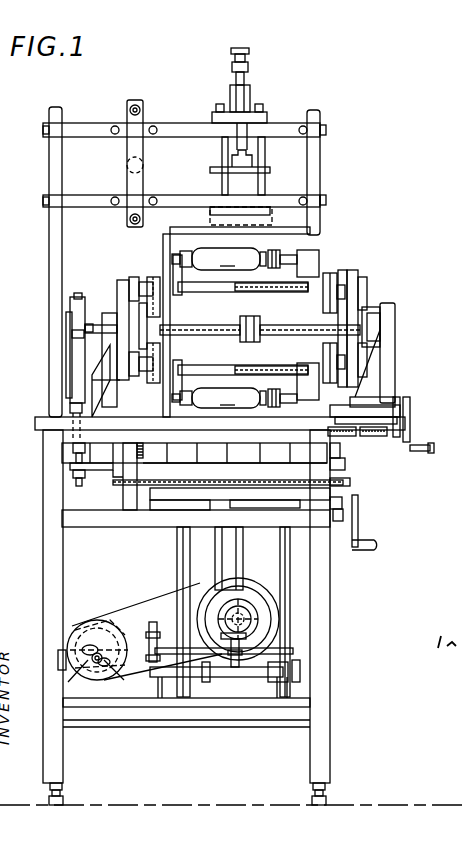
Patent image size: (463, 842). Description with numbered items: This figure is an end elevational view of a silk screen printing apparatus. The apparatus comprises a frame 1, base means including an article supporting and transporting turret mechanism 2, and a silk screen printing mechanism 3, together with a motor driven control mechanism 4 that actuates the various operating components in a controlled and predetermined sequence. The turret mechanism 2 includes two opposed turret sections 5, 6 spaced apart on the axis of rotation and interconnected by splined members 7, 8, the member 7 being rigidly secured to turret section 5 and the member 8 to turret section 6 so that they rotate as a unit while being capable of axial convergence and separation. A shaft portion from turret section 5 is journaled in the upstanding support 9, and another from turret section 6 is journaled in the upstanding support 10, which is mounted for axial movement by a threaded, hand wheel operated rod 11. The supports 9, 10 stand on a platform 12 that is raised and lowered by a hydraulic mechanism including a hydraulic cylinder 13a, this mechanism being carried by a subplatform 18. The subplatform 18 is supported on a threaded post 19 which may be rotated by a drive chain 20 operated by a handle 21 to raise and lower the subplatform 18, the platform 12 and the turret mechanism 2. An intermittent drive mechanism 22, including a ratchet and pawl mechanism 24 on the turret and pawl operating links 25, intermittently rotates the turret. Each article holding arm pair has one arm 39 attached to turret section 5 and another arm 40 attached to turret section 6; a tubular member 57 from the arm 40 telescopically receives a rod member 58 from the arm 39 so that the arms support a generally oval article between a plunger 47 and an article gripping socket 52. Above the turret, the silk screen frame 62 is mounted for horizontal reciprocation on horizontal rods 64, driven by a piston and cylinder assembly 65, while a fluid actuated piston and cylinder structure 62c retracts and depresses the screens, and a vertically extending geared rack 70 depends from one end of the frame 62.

The frame 1 is at (349, 612).
The turret mechanism 2 is at (350, 262).
The silk screen printing mechanism 3 is at (305, 168).
The motor driven control mechanism 4 is at (196, 600).
The turret section 5 is at (128, 280).
The turret section 6 is at (358, 274).
The splined member 7 is at (213, 322).
The splined member 8 is at (292, 322).
The upstanding support 9 is at (108, 313).
The upstanding support 10 is at (392, 303).
The threaded hand wheel operated rod 11 is at (380, 438).
The platform 12 is at (380, 404).
The hydraulic cylinder 13a is at (225, 546).
The subplatform 18 is at (352, 470).
The threaded post 19 is at (146, 450).
The drive chain 20 is at (350, 483).
The handle 21 is at (358, 512).
The intermittent drive mechanism 22 is at (54, 364).
The ratchet and pawl mechanism 24 is at (70, 308).
The pawl operating links 25 is at (66, 337).
The arm 39 is at (177, 293).
The arm 40 is at (325, 256).
The plunger 47 is at (278, 246).
The article gripping socket 52 is at (217, 252).
The tubular member 57 is at (279, 284).
The rod member 58 is at (195, 284).
The silk screen frame 62 is at (312, 226).
The fluid actuated piston and cylinder structure 62c is at (250, 88).
The horizontal rods 64 is at (153, 198).
The piston and cylinder assembly 65 is at (127, 166).
The geared rack 70 is at (192, 250).